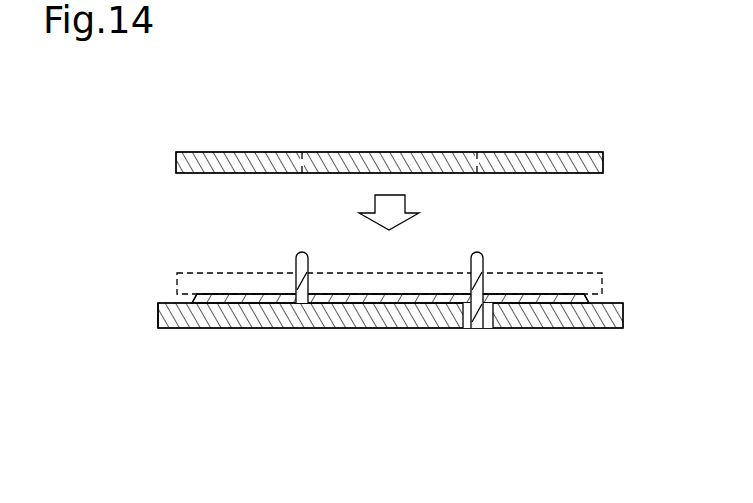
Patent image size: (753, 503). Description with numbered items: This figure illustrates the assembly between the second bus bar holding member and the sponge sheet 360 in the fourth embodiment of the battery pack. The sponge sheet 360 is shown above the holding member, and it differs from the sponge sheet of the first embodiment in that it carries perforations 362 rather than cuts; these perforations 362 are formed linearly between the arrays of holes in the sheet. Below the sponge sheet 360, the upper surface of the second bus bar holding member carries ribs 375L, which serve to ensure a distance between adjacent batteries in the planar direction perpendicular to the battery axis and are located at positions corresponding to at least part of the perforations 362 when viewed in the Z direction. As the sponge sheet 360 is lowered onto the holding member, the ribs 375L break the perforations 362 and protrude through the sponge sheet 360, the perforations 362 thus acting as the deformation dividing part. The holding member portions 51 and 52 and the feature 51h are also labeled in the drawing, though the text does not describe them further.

The sponge sheet 360 is at (567, 124).
The perforations 362 is at (302, 152).
The ribs 375L is at (308, 263).
The base plate 51 is at (312, 328).
The second plate 52 is at (568, 328).
The plate end 51h is at (157, 318).